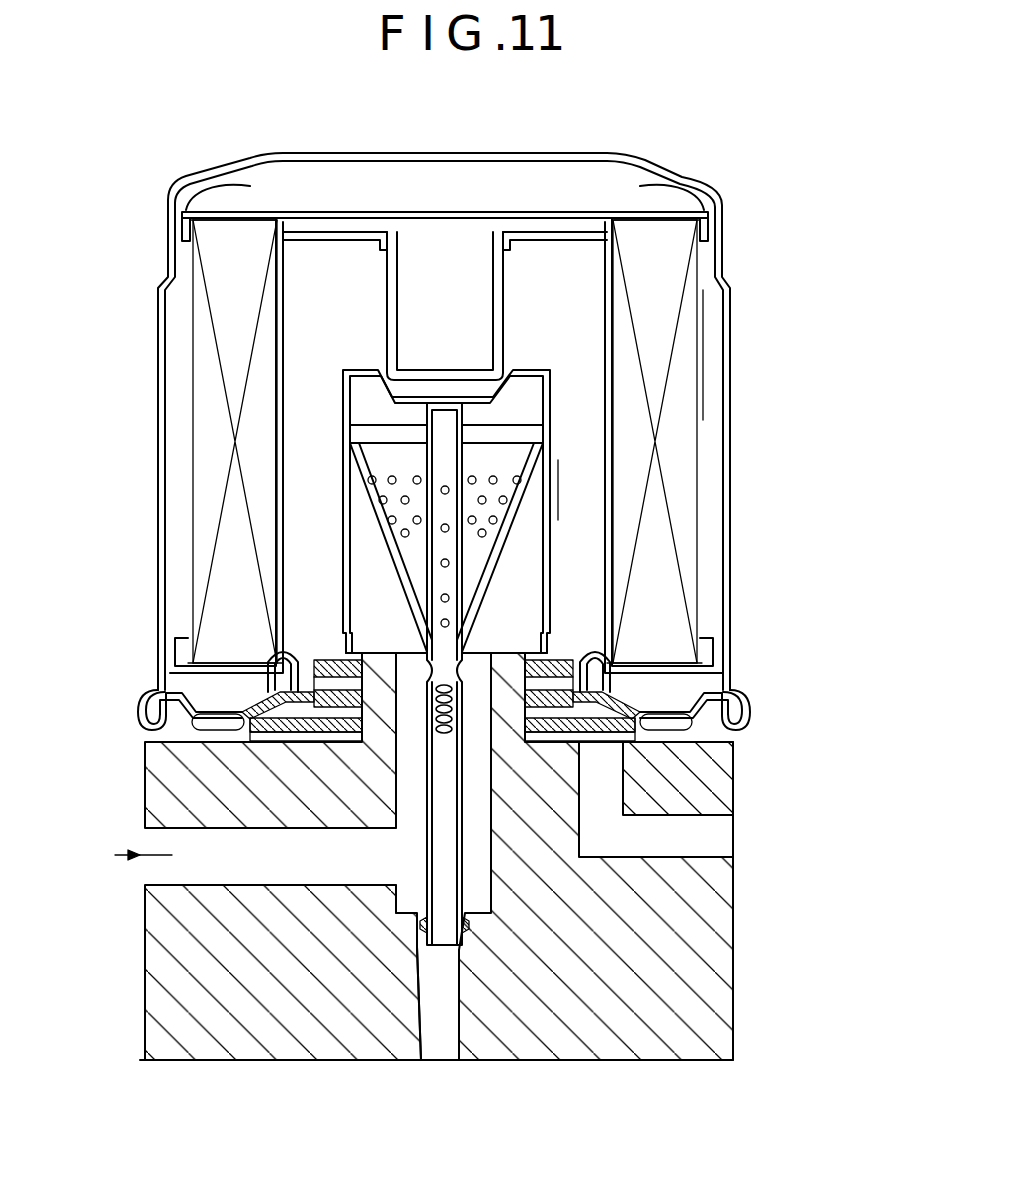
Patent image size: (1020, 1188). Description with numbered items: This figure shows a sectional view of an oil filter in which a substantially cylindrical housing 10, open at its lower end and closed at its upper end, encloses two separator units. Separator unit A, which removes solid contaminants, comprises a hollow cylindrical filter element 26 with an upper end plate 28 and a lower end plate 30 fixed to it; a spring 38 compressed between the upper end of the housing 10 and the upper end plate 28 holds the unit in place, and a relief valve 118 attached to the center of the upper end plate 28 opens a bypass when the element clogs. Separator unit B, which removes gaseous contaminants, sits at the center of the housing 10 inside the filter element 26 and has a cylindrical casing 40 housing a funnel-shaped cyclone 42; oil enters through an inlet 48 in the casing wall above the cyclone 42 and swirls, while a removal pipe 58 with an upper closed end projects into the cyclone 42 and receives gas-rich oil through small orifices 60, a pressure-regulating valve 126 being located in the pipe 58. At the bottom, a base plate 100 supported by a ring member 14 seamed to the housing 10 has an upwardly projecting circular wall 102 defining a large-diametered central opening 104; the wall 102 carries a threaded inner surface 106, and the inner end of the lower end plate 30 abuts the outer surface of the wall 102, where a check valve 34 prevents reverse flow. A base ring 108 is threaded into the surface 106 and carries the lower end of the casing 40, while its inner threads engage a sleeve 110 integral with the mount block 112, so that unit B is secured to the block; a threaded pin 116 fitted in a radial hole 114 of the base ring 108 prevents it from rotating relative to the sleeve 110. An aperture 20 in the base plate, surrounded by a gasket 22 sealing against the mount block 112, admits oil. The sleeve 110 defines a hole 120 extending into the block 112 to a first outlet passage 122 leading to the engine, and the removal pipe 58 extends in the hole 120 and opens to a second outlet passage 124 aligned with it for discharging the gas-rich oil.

The housing 10 is at (731, 397).
The ring member 14 is at (747, 722).
The aperture 20 is at (598, 744).
The gasket 22 is at (672, 744).
The filter element 26 is at (687, 510).
The upper end plate 28 is at (665, 232).
The lower end plate 30 is at (637, 663).
The check valve 34 is at (657, 668).
The spring 38 is at (673, 192).
The cylindrical casing 40 is at (553, 487).
The funnel-shaped member or cyclone 42 is at (497, 530).
The inlet 48 is at (548, 395).
The removal pipe 58 is at (452, 441).
The orifices 60 is at (445, 489).
The base plate 100 is at (665, 693).
The circular wall 102 is at (568, 662).
The central opening 104 is at (320, 738).
The threaded inner surface 106 is at (590, 744).
The base ring 108 is at (552, 662).
The sleeve 110 is at (430, 655).
The mount block 112 is at (687, 1023).
The radial hole 114 is at (533, 744).
The threaded pin 116 is at (562, 744).
The relief valve 118 is at (470, 240).
The hole 120 is at (405, 778).
The first outlet passage 122 is at (243, 867).
The second outlet passage 124 is at (437, 1033).
The pressure-regulating valve 126 is at (333, 657).
The separator unit A is at (707, 357).
The separator unit B is at (583, 492).